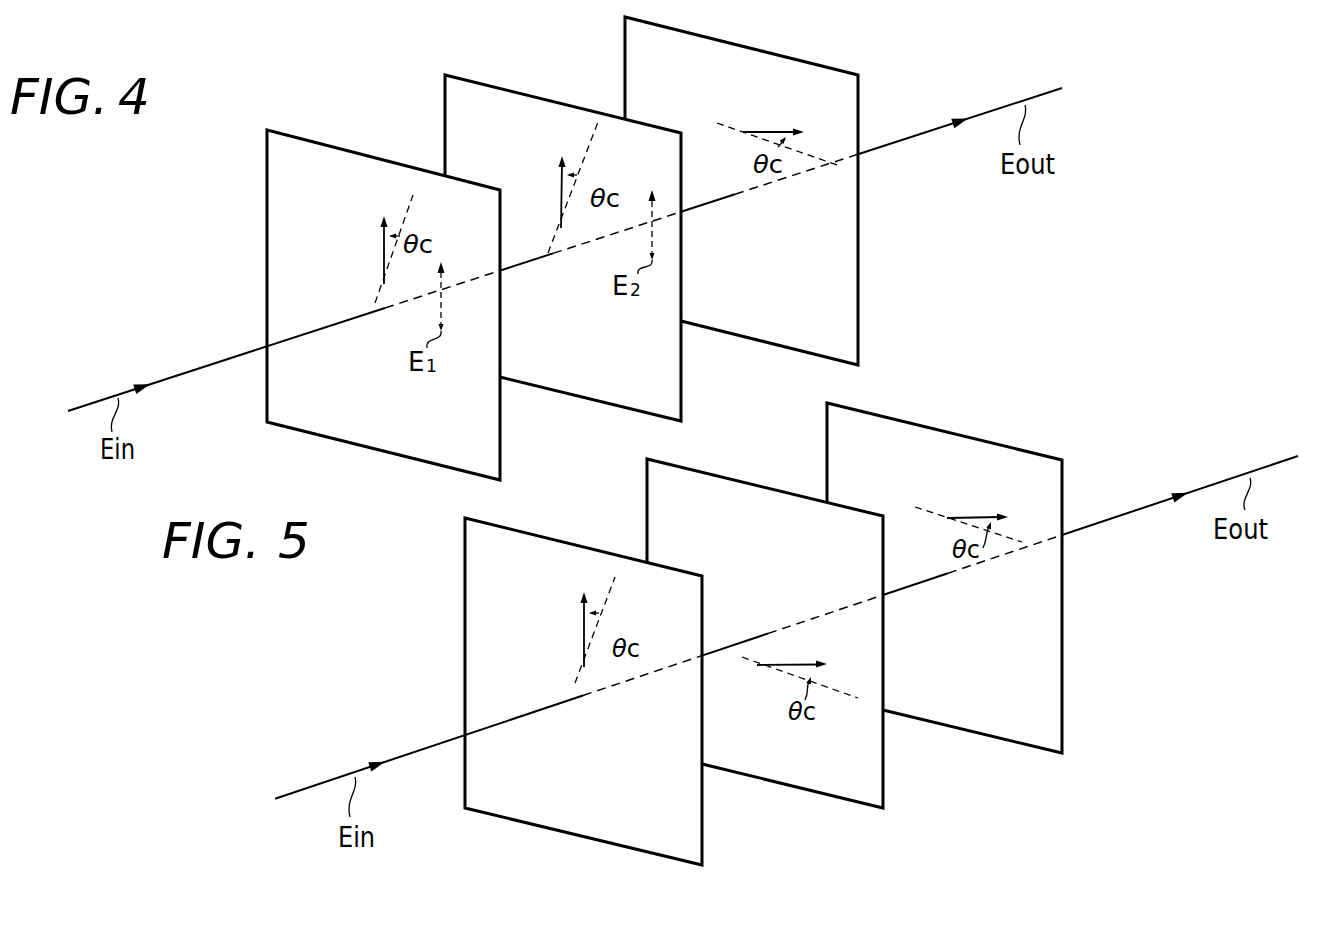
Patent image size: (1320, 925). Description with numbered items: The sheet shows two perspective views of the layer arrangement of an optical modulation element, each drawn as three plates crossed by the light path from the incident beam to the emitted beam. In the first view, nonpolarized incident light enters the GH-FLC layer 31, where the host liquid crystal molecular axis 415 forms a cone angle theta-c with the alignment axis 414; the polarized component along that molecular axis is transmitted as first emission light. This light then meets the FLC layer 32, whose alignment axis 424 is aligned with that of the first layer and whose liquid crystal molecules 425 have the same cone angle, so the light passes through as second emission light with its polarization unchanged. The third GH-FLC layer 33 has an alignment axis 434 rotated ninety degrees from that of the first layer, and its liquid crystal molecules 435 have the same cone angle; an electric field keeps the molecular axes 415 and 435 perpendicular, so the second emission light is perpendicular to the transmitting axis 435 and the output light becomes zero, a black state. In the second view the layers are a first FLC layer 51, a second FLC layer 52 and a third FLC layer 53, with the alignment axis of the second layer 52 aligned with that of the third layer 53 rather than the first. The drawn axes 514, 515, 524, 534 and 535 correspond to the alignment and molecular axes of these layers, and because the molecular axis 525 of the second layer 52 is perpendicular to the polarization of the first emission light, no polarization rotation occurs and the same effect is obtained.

In FIG. 4, the GH-FLC layer 31 is at (501, 452).
In FIG. 4, the FLC layer 32 is at (682, 390).
In FIG. 4, the third GH-FLC layer 33 is at (859, 327).
In FIG. 4, the alignment axis 414 is at (415, 201).
In FIG. 4, the host liquid crystal molecular axis 415 is at (380, 256).
In FIG. 4, the alignment axis 424 is at (600, 128).
In FIG. 4, the liquid crystal molecules 425 is at (560, 190).
In FIG. 4, the alignment axis 434 is at (818, 153).
In FIG. 4, the liquid crystal molecules 435 is at (760, 128).
In FIG. 5, the first FLC layer 51 is at (520, 531).
In FIG. 5, the second FLC layer 52 is at (707, 475).
In FIG. 5, the third FLC layer 53 is at (880, 416).
In FIG. 5, the crystal axis of first plate 514 is at (620, 603).
In FIG. 5, the polarization direction in first plate 515 is at (578, 640).
In FIG. 5, the crystal axis of second plate 524 is at (848, 700).
In FIG. 5, the molecular axis 525 is at (798, 663).
In FIG. 5, the crystal axis of third plate 534 is at (1020, 542).
In FIG. 5, the polarization direction in third plate 535 is at (965, 517).